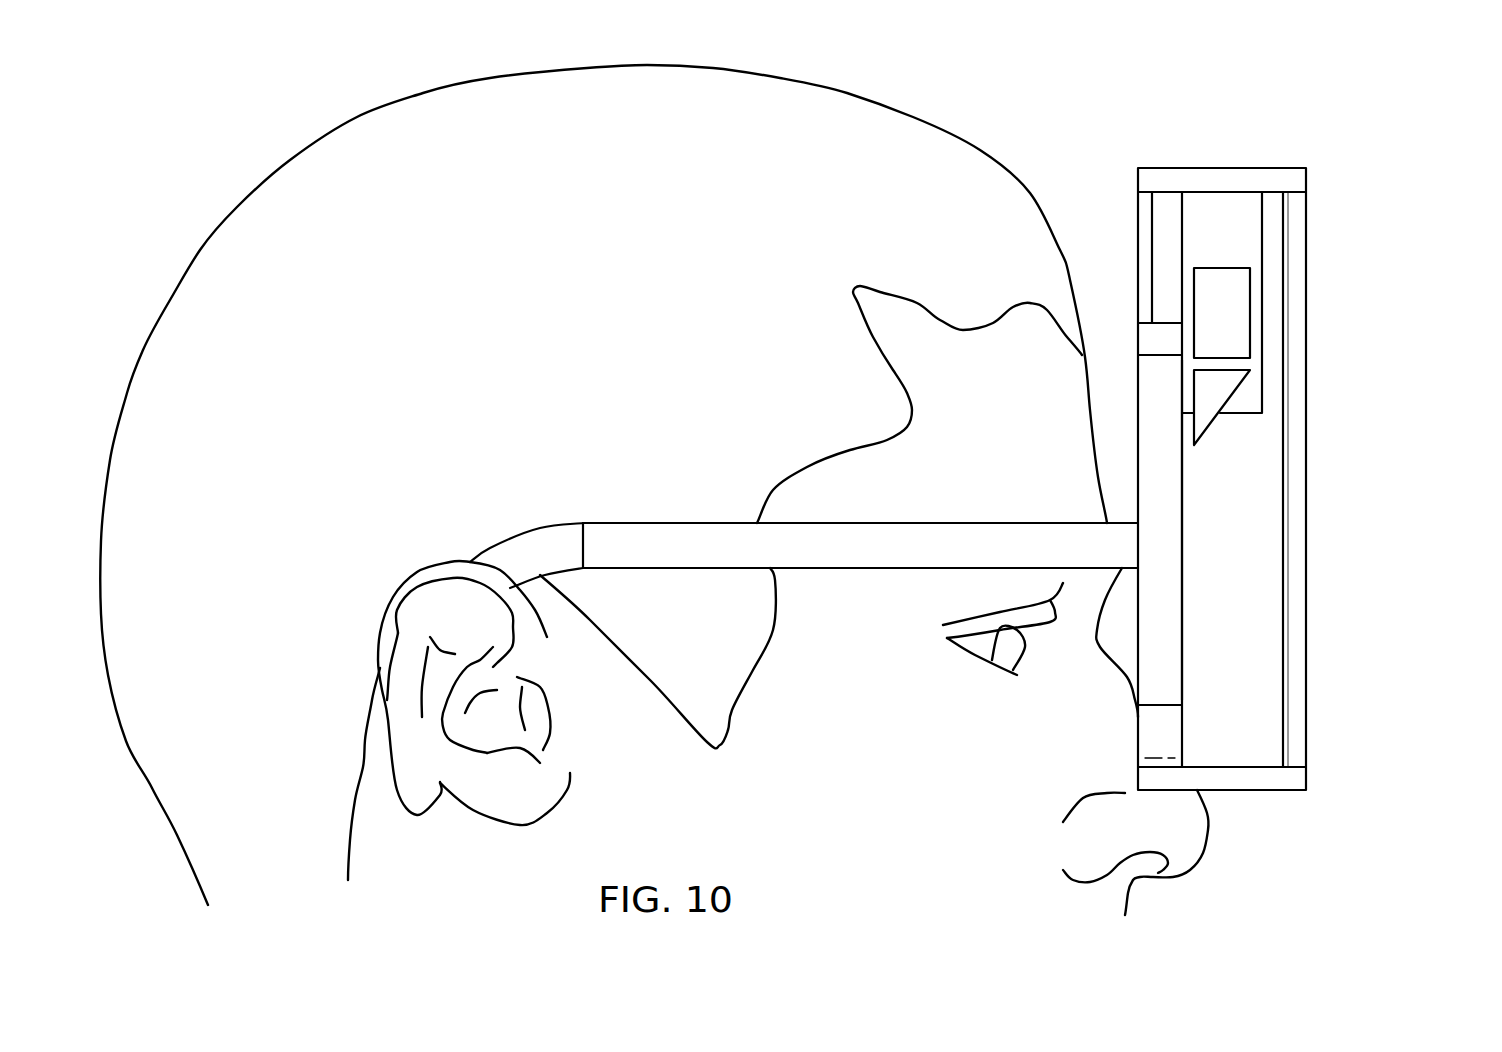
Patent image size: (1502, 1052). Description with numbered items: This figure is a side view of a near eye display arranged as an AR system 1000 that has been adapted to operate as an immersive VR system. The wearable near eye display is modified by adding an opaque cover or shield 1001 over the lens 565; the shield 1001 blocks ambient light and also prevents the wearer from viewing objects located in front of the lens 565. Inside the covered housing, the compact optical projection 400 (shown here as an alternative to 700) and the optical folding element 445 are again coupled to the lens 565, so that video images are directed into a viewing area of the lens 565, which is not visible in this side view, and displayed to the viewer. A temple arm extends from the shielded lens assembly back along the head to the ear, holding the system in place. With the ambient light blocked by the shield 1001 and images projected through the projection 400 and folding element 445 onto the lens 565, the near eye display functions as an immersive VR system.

The AR system 1000 is at (970, 418).
The opaque cover or shield 1001 is at (1304, 451).
The compact optical projection system 400 is at (1326, 302).
The optical assembly 700 is at (1262, 246).
The optical folding element 445 is at (1252, 312).
The lens 565 is at (1175, 637).